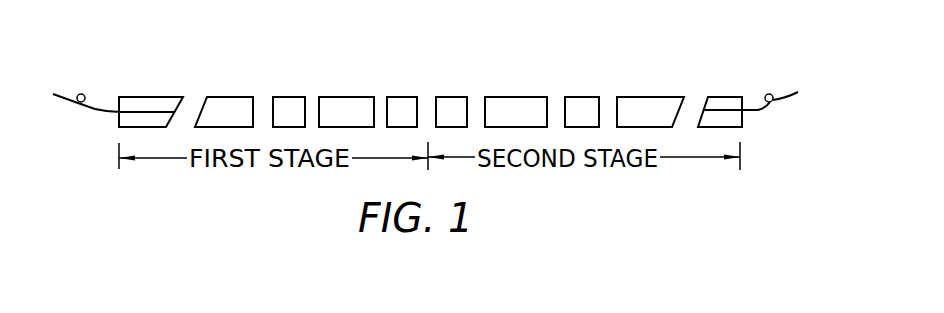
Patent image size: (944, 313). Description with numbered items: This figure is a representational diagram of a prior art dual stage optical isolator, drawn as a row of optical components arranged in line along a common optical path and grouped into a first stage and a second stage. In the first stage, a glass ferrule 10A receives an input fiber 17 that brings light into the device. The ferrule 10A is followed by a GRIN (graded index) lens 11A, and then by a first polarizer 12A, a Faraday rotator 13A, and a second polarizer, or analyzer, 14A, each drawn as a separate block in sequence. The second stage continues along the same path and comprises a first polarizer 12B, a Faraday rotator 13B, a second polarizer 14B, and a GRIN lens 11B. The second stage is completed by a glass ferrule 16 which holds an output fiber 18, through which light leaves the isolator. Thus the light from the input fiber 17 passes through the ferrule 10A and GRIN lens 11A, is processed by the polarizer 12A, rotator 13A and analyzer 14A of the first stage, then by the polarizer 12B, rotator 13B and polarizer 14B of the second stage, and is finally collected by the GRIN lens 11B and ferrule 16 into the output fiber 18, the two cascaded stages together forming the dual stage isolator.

The input fiber 17 is at (85, 95).
The glass ferrule 10A is at (133, 97).
The GRIN lens 11A is at (222, 97).
The first polarizer 12A is at (283, 97).
The Faraday rotator 13A is at (351, 97).
The second polarizer (analyzer) 14A is at (405, 97).
The first polarizer 12B is at (454, 97).
The Faraday rotator 13B is at (503, 97).
The second polarizer 14B is at (575, 97).
The GRIN lens 11B is at (645, 97).
The glass ferrule 16 is at (722, 97).
The output fiber 18 is at (763, 109).